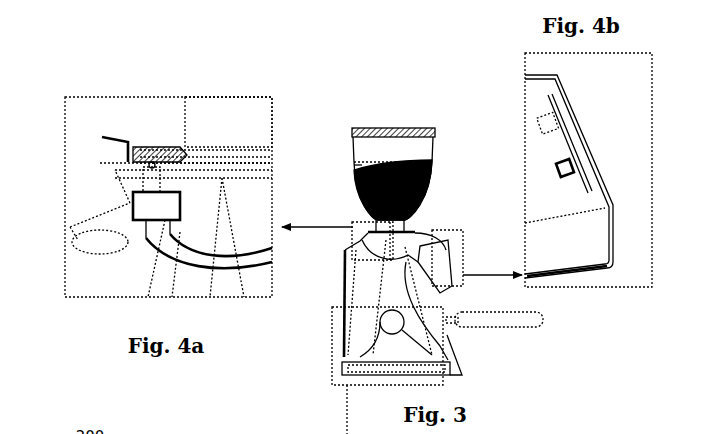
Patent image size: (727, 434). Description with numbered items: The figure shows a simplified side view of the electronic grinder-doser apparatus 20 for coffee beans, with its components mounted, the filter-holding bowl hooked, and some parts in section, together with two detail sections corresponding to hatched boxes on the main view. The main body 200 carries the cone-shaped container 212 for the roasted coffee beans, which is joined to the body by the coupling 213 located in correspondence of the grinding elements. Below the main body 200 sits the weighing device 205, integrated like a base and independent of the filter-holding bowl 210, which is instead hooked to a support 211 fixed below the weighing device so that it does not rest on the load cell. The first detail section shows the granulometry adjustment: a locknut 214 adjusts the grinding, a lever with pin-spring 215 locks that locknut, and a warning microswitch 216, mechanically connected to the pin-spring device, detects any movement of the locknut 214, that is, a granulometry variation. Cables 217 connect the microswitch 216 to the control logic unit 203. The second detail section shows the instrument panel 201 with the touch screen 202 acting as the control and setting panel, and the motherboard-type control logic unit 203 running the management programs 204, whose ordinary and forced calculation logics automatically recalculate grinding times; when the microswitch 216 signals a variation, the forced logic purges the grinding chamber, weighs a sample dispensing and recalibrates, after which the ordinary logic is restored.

In FIG. 3, the electronic grinder-doser apparatus 20 is at (382, 106).
In FIG. 3, the main body 200 is at (346, 284).
In FIG. 4B, the instrument panel 201 is at (585, 266).
In FIG. 4B, the touch screen 202 is at (605, 176).
In FIG. 4B, the control logic unit 203 is at (590, 150).
In FIG. 4B, the management programs 204 is at (553, 165).
In FIG. 3, the weighing device 205 is at (332, 370).
In FIG. 3, the filter-holding bowl 210 is at (482, 323).
In FIG. 3, the support for the filter-holding bowl 211 is at (467, 360).
In FIG. 3, the cone-shaped container 212 is at (356, 170).
In FIG. 3, the coupling of the cone-shaped container 213 is at (410, 226).
In FIG. 4A, the coupling of the cone-shaped container 213 is at (233, 146).
In FIG. 4A, the locknut 214 is at (172, 150).
In FIG. 4A, the lever with pin-spring 215 is at (110, 140).
In FIG. 4A, the microswitch 216 is at (143, 181).
In FIG. 4A, the cables 217 is at (200, 250).